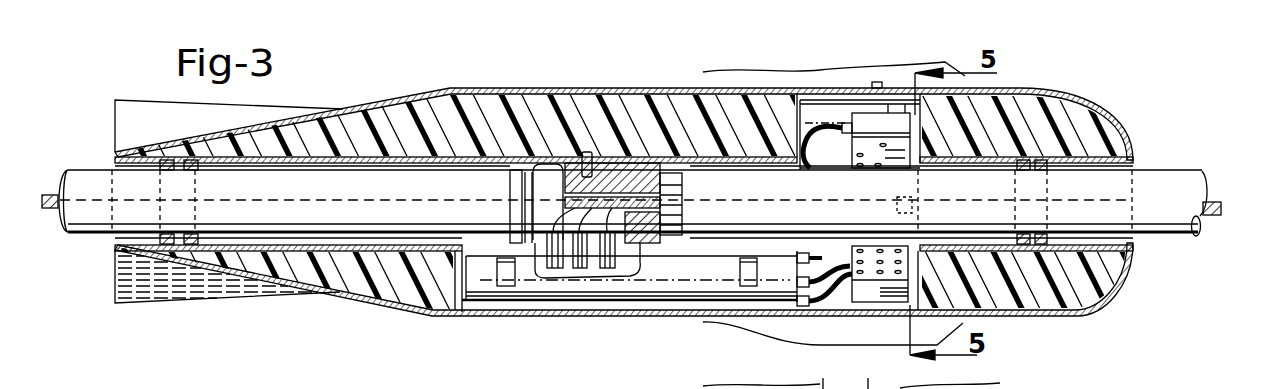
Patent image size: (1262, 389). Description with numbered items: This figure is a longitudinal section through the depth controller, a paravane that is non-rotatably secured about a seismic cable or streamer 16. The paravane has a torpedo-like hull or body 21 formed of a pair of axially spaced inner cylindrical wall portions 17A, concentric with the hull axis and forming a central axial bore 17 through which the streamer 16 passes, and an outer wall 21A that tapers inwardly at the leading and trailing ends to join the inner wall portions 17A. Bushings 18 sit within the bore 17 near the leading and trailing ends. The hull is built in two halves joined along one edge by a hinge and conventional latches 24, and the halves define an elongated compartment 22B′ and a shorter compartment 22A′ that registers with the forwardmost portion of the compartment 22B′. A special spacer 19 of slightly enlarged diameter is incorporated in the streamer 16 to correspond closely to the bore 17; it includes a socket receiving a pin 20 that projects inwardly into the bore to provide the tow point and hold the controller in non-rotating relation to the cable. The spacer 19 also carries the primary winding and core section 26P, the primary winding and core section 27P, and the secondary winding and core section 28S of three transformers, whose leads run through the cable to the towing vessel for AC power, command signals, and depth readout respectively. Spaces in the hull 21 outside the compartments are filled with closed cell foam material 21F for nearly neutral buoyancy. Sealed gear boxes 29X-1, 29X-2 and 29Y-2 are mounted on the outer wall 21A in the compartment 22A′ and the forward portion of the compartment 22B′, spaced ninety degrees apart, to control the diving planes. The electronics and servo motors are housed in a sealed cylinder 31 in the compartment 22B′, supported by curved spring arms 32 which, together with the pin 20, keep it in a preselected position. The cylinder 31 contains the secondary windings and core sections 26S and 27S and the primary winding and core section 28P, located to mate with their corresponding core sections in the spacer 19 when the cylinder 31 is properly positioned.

The seismic cable or streamer 16 is at (1170, 178).
The central axial bore 17 is at (993, 157).
The inner cylindrical wall portions 17A is at (468, 148).
The bushings 18 is at (192, 247).
The special spacer 19 is at (451, 203).
The pin 20 is at (588, 150).
The torpedo-like hull or body 21 is at (388, 312).
The outer wall 21A is at (645, 88).
The closed cell foam material 21F is at (365, 115).
The shorter compartment 22A′ is at (815, 100).
The elongated compartment 22B′ is at (462, 318).
The latches 24 is at (775, 377).
The primary winding and primary core section of transformer 26 26P is at (677, 227).
The secondary winding and core section of transformer 26 26S is at (633, 262).
The primary winding and primary core section of transformer 27 27P is at (567, 180).
The secondary winding and core section of transformer 27 27S is at (737, 283).
The primary winding and core section of transformer 28 28P is at (543, 270).
The secondary winding and secondary core section of transformer 28 28S is at (510, 196).
The sealed gear box 29X-1 is at (875, 312).
The sealed gear box 29X-2 is at (865, 372).
The sealed gear box 29Y-2 is at (887, 112).
The sealed cylinder 31 is at (613, 300).
The curved spring arms 32 is at (507, 285).